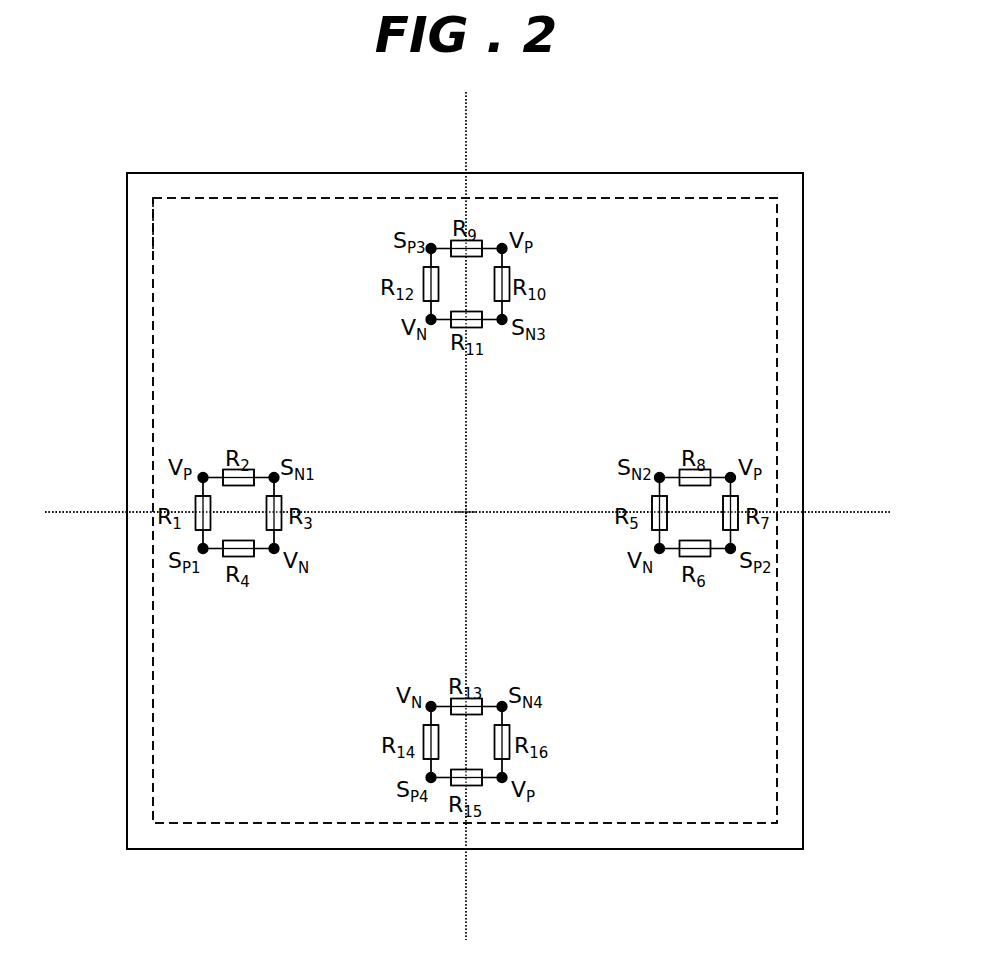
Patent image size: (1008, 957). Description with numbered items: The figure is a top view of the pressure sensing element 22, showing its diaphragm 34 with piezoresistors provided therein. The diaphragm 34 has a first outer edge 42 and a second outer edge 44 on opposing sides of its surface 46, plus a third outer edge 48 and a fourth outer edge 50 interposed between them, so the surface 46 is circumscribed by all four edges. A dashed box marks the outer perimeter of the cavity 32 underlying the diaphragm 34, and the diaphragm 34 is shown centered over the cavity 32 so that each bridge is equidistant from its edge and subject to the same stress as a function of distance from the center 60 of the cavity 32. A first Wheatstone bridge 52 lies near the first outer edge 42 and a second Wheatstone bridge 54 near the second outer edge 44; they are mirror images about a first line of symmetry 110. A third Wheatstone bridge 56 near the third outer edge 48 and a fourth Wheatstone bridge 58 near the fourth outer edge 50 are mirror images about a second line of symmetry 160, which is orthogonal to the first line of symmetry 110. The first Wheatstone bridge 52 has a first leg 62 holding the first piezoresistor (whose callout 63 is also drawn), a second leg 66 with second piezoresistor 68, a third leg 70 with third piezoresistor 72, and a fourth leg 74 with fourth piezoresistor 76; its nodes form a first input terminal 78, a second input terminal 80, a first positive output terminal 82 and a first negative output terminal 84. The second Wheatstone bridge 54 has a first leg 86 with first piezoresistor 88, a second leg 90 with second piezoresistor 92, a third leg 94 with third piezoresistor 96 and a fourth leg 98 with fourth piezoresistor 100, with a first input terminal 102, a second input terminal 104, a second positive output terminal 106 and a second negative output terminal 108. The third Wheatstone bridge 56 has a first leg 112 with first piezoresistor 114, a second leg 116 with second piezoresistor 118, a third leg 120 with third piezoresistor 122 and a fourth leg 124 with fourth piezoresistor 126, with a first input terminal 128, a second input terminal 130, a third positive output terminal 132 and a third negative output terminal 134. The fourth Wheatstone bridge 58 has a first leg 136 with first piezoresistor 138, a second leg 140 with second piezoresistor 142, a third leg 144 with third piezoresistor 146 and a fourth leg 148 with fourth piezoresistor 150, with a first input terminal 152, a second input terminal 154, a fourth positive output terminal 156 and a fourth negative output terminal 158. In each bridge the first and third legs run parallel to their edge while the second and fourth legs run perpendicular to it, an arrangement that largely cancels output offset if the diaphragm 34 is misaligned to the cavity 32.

The pressure sensing element 22 is at (845, 917).
The cavity 32 is at (152, 212).
The diaphragm 34 is at (170, 173).
The first outer edge 42 is at (127, 683).
The second outer edge 44 is at (803, 683).
The surface 46 is at (224, 257).
The third outer edge 48 is at (747, 172).
The fourth outer edge 50 is at (237, 850).
The first Wheatstone bridge 52 is at (240, 360).
The second Wheatstone bridge 54 is at (702, 367).
The third Wheatstone bridge 56 is at (613, 283).
The fourth Wheatstone bridge 58 is at (608, 748).
The center of cavity 60 is at (468, 513).
The first line of symmetry 110 is at (467, 478).
The second line of symmetry 160 is at (440, 508).
The first leg 62 is at (198, 537).
The resistor R1 63 is at (197, 505).
The second leg 66 is at (217, 475).
The second piezoresistor 68 is at (253, 478).
The third leg 70 is at (276, 493).
The third piezoresistor 72 is at (280, 520).
The fourth leg 74 is at (262, 552).
The fourth piezoresistor 76 is at (230, 553).
The first input terminal 78 is at (203, 475).
The second input terminal 80 is at (275, 552).
The first positive output terminal 82 is at (203, 552).
The first negative output terminal 84 is at (275, 476).
The first leg 86 is at (732, 537).
The first piezoresistor 88 is at (737, 505).
The second leg 90 is at (716, 474).
The second piezoresistor 92 is at (677, 477).
The third leg 94 is at (654, 493).
The third piezoresistor 96 is at (655, 520).
The fourth leg 98 is at (675, 552).
The fourth piezoresistor 100 is at (700, 553).
The first input terminal 102 is at (732, 475).
The second input terminal 104 is at (659, 552).
The second positive output terminal 106 is at (732, 552).
The second negative output terminal 108 is at (660, 476).
The first leg 112 is at (445, 245).
The first piezoresistor 114 is at (474, 247).
The second leg 116 is at (505, 262).
The second piezoresistor 118 is at (505, 290).
The third leg 120 is at (492, 324).
The third piezoresistor 122 is at (459, 324).
The fourth leg 124 is at (429, 307).
The fourth piezoresistor 126 is at (427, 278).
The first input terminal 128 is at (503, 243).
The second input terminal 130 is at (431, 322).
The third positive output terminal 132 is at (430, 243).
The third negative output terminal 134 is at (503, 322).
The first leg 136 is at (445, 781).
The first piezoresistor 138 is at (476, 782).
The second leg 140 is at (505, 763).
The second piezoresistor 142 is at (505, 735).
The third leg 144 is at (491, 703).
The third piezoresistor 146 is at (455, 703).
The fourth leg 148 is at (427, 718).
The fourth piezoresistor 150 is at (425, 760).
The first input terminal 152 is at (502, 780).
The second input terminal 154 is at (431, 704).
The fourth positive output terminal 156 is at (431, 780).
The fourth negative output terminal 158 is at (503, 704).